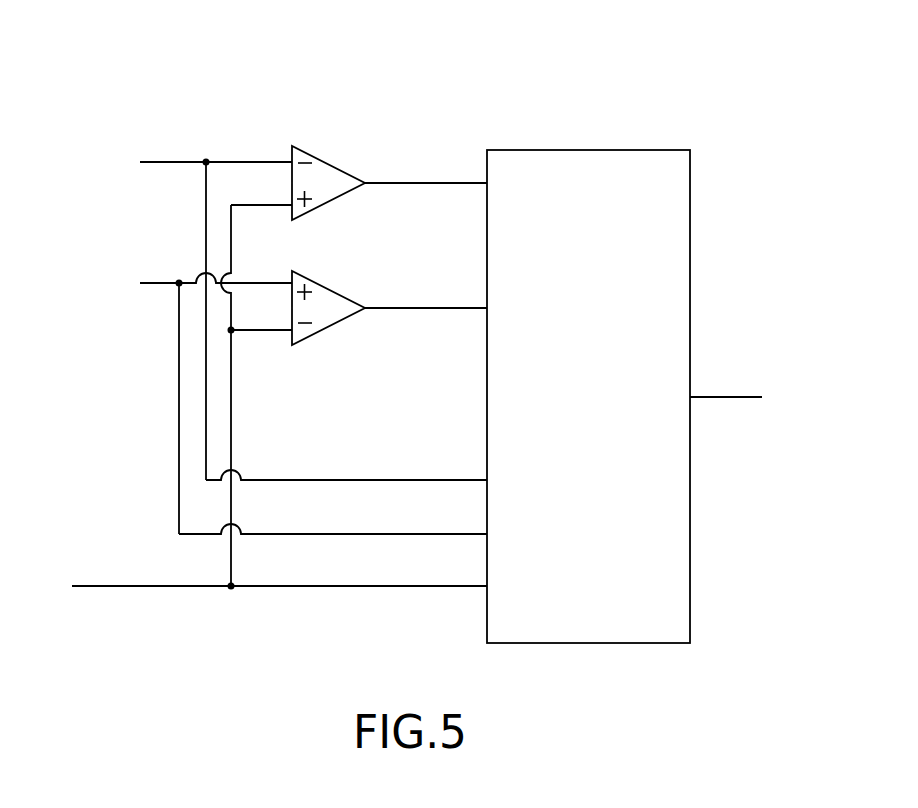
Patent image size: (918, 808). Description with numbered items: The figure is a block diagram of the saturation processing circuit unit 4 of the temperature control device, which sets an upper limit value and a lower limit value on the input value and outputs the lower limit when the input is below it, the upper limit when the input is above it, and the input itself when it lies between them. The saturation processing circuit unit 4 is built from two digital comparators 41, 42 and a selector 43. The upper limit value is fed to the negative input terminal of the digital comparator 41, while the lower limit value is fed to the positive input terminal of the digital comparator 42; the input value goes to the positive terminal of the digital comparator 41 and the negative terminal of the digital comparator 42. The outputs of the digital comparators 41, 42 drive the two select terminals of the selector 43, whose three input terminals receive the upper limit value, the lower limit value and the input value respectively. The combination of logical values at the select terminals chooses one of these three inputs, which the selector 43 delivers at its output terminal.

The saturation processing circuit unit 4 is at (594, 62).
The digital comparator 41 is at (338, 169).
The digital comparator 42 is at (338, 323).
The selector 43 is at (634, 150).